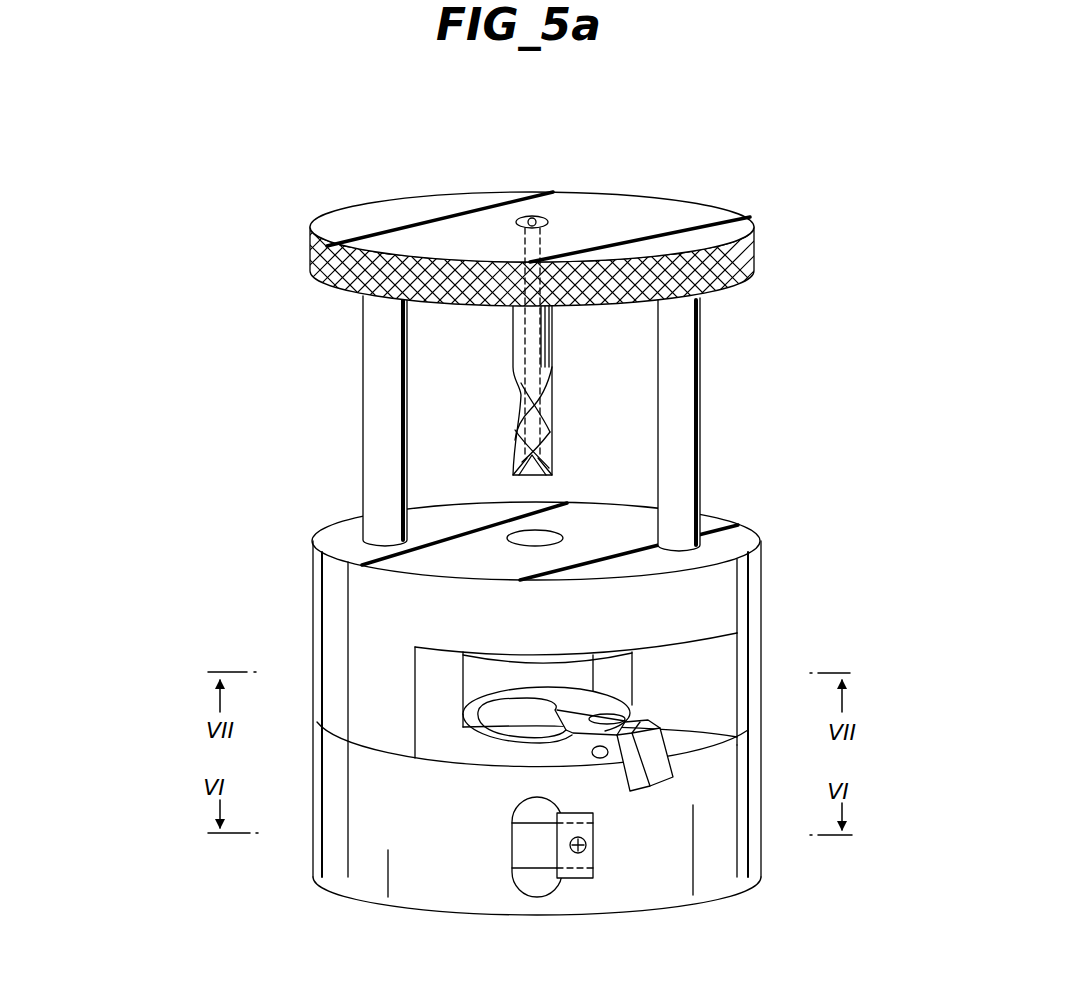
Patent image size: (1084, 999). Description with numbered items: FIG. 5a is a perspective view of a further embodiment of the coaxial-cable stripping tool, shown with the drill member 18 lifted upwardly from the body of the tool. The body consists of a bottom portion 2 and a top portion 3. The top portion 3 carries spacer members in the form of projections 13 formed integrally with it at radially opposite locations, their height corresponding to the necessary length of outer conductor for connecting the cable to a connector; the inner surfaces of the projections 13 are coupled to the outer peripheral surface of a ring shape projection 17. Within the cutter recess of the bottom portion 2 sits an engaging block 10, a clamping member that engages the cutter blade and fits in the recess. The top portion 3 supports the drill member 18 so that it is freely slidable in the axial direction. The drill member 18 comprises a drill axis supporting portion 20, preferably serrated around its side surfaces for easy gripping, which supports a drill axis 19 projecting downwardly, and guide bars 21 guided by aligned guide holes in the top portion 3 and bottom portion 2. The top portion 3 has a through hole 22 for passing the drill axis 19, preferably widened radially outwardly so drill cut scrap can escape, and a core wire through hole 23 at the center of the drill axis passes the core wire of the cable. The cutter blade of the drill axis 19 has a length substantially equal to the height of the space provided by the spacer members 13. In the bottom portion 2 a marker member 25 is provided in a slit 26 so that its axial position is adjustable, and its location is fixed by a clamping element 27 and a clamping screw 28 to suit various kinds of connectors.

The bottom portion 2 is at (340, 878).
The top portion 3 is at (740, 537).
The engaging block 10 is at (652, 722).
The projections 13 is at (417, 682).
The ring shape projection 17 is at (475, 718).
The drill member 18 is at (358, 196).
The drill axis 19 is at (552, 350).
The drill axis supporting portion 20 is at (657, 208).
The guide bars 21 is at (372, 363).
The through hole 22 is at (532, 532).
The core wire through hole 23 is at (540, 258).
The marker member 25 is at (532, 850).
The slit 26 is at (520, 804).
The clamping element 27 is at (592, 830).
The clamping screw 28 is at (588, 848).